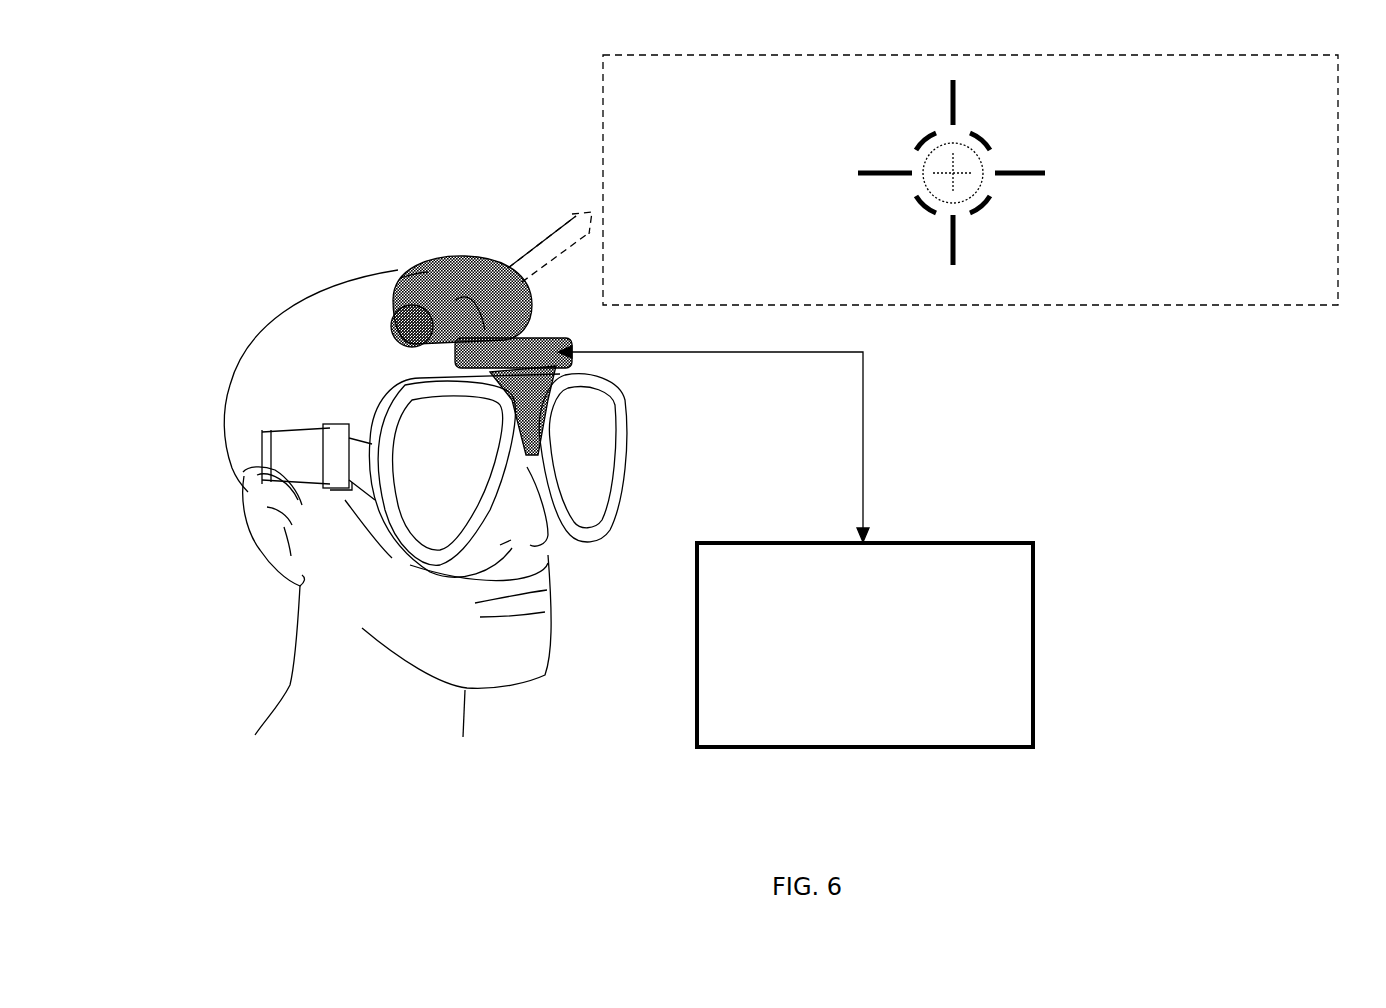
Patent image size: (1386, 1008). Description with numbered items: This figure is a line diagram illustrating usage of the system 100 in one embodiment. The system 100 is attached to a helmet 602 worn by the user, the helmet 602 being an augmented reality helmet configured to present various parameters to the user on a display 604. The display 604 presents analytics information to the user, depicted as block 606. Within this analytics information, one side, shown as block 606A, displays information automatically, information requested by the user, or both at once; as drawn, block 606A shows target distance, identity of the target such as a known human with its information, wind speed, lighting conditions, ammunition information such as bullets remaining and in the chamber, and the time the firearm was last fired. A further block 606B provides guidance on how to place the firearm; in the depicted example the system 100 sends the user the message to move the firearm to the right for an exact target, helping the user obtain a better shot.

The system 100 is at (694, 617).
The helmet 602 is at (243, 418).
The display 604 is at (395, 422).
The analytics information block 606 is at (602, 80).
The information block 606A is at (1143, 70).
The guidance block 606B is at (637, 130).